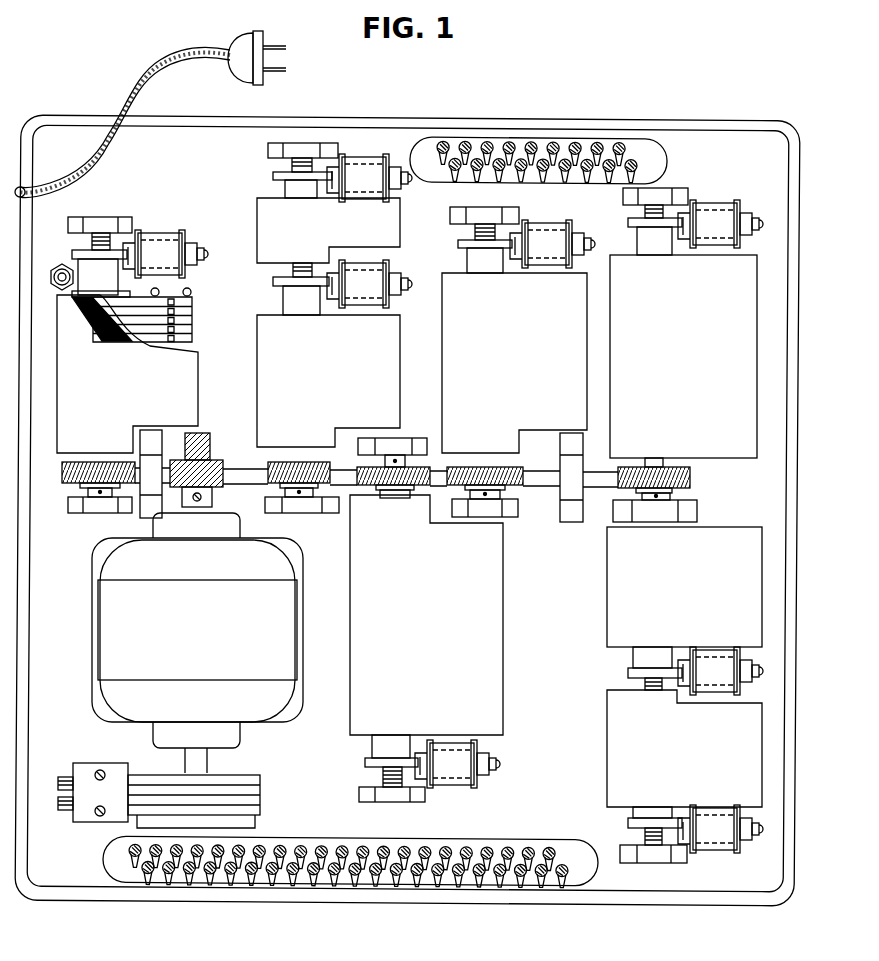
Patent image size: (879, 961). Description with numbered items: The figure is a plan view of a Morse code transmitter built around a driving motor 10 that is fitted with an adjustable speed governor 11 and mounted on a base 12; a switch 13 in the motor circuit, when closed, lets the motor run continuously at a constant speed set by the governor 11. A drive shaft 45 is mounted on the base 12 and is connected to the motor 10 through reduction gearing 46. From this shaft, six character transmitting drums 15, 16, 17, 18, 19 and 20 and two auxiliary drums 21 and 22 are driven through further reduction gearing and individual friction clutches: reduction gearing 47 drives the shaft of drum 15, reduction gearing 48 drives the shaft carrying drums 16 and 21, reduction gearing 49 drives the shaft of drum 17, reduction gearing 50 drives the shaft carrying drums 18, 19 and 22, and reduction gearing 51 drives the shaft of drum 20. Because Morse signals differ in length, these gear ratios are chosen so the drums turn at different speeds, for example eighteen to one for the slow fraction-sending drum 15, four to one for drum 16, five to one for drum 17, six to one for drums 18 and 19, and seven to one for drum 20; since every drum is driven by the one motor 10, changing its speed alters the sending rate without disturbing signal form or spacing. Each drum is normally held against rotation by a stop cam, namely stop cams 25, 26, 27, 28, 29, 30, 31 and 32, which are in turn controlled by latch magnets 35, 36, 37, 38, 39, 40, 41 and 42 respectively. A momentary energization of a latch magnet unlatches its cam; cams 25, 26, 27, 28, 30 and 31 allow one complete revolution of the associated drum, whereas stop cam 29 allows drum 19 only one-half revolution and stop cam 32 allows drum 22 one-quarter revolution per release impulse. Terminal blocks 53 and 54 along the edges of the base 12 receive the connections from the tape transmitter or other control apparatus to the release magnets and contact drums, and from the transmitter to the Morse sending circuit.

The driving motor 10 is at (280, 633).
The adjustable speed governor 11 is at (250, 785).
The base 12 is at (62, 872).
The switch 13 is at (56, 288).
The character transmitting drum 15 is at (53, 414).
The character transmitting drum 16 is at (251, 416).
The character transmitting drum 17 is at (438, 418).
The character transmitting drum 18 is at (611, 421).
The character transmitting drum 19 is at (601, 614).
The character transmitting drum 20 is at (346, 611).
The auxiliary rotatable drum 21 is at (241, 229).
The auxiliary rotatable drum 22 is at (591, 749).
The stop cam 25 is at (78, 253).
The stop cam 26 is at (280, 285).
The stop cam 27 is at (467, 245).
The stop cam 28 is at (637, 225).
The stop cam 29 is at (630, 673).
The stop cam 30 is at (370, 765).
The stop cam 31 is at (275, 177).
The stop cam 32 is at (630, 823).
The latch magnet 35 is at (155, 246).
The latch magnet 36 is at (361, 306).
The latch magnet 37 is at (540, 240).
The latch magnet 38 is at (708, 213).
The latch magnet 39 is at (707, 662).
The latch magnet 40 is at (452, 750).
The latch magnet 41 is at (357, 168).
The latch magnet 42 is at (709, 824).
The drive shaft 45 is at (238, 481).
The reduction gearing 46 is at (207, 457).
The reduction gearing 47 is at (66, 482).
The reduction gearing 48 is at (314, 491).
The reduction gearing 49 is at (505, 488).
The reduction gearing 50 is at (690, 482).
The reduction gearing 51 is at (412, 493).
The terminal block 53 is at (516, 140).
The terminal block 54 is at (347, 872).